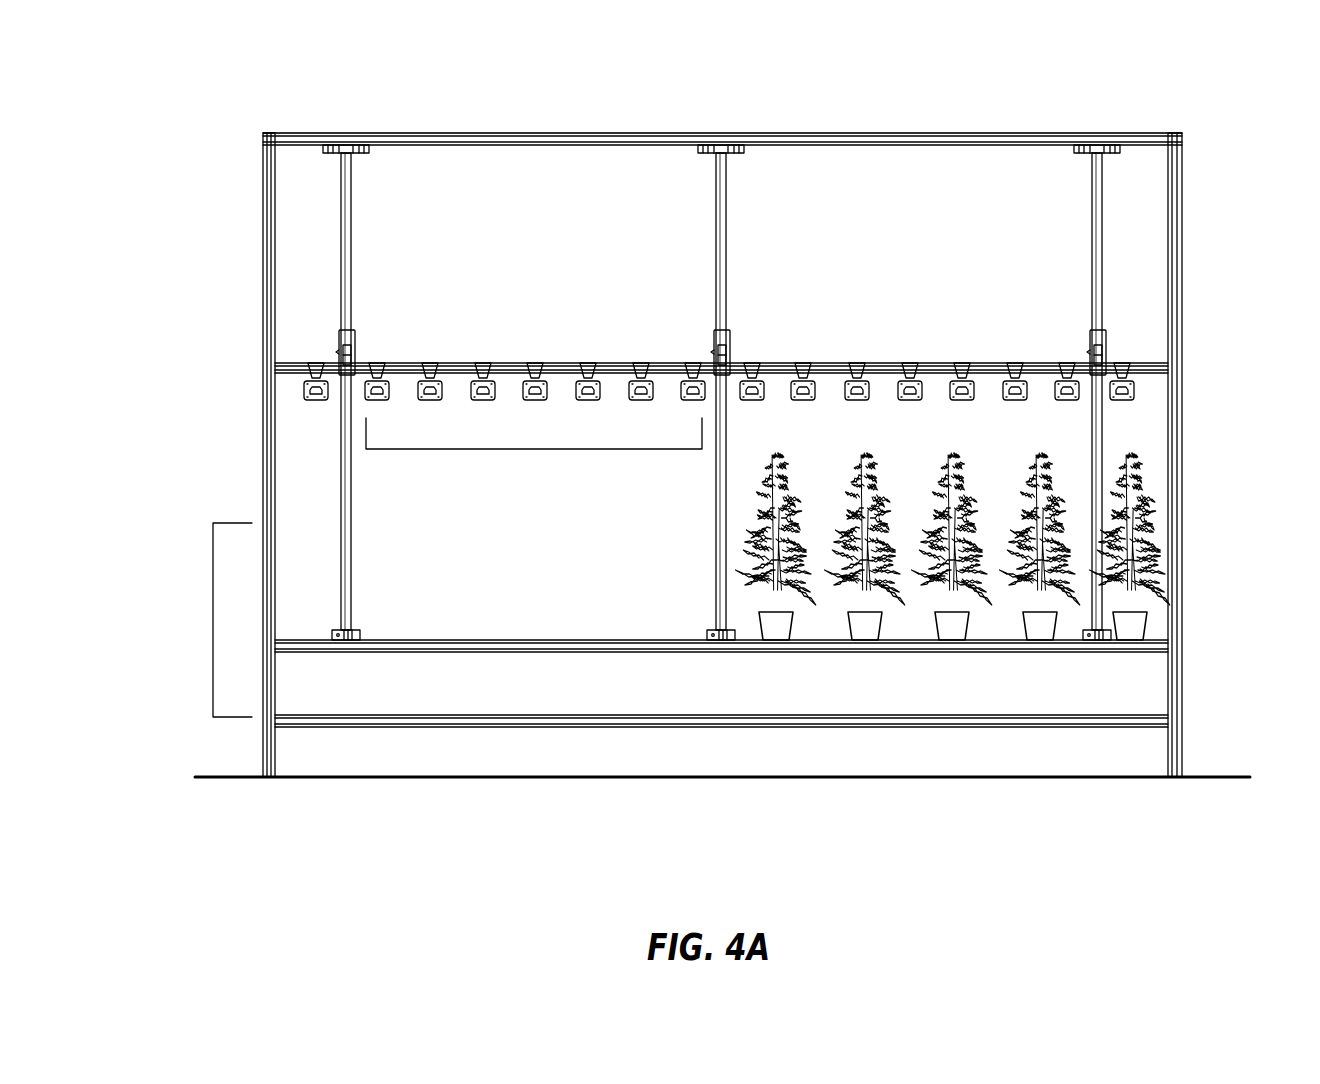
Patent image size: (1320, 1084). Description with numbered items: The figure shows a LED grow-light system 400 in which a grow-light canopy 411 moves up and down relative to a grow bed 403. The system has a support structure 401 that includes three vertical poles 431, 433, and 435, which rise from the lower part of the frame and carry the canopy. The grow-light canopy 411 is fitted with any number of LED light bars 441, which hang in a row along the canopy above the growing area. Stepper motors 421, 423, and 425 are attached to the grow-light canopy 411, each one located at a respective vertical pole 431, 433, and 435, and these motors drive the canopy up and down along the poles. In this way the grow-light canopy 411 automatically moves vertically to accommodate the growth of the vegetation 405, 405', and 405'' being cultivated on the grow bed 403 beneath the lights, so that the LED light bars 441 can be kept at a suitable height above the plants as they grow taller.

The LED grow-light system 400 is at (248, 108).
The support structure 401 is at (1181, 210).
The grow bed 403 is at (213, 604).
The vegetation 405 is at (800, 679).
The vegetation 405' is at (892, 661).
The vegetation 405'' is at (983, 643).
The grow-light canopy 411 is at (455, 363).
The stepper motor 421 is at (356, 340).
The stepper motor 423 is at (730, 340).
The stepper motor 425 is at (1105, 340).
The vertical pole 431 is at (352, 175).
The vertical pole 433 is at (727, 235).
The vertical pole 435 is at (1091, 240).
The LED light bars 441 is at (533, 449).